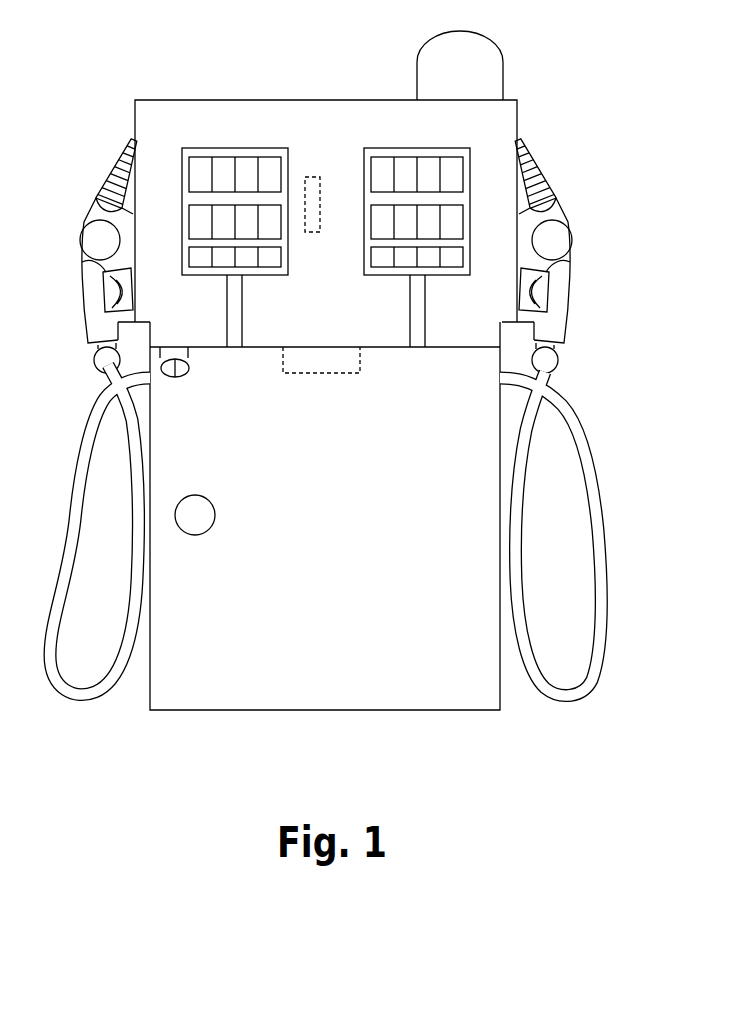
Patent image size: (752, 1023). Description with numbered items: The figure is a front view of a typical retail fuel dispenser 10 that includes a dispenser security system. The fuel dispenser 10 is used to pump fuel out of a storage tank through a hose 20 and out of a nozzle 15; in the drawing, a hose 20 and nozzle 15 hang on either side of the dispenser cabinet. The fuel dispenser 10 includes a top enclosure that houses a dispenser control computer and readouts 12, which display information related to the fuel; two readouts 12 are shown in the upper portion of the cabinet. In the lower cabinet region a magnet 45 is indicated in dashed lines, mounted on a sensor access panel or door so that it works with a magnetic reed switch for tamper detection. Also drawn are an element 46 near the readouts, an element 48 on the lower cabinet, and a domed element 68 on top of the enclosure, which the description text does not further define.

The retail fuel dispenser 10 is at (530, 123).
The readouts 12 is at (414, 149).
The nozzle 15 is at (572, 297).
The hose 20 is at (612, 640).
The magnet 45 is at (313, 362).
The indicator element 46 is at (316, 228).
The lock 48 is at (188, 361).
The dome housing 68 is at (468, 63).